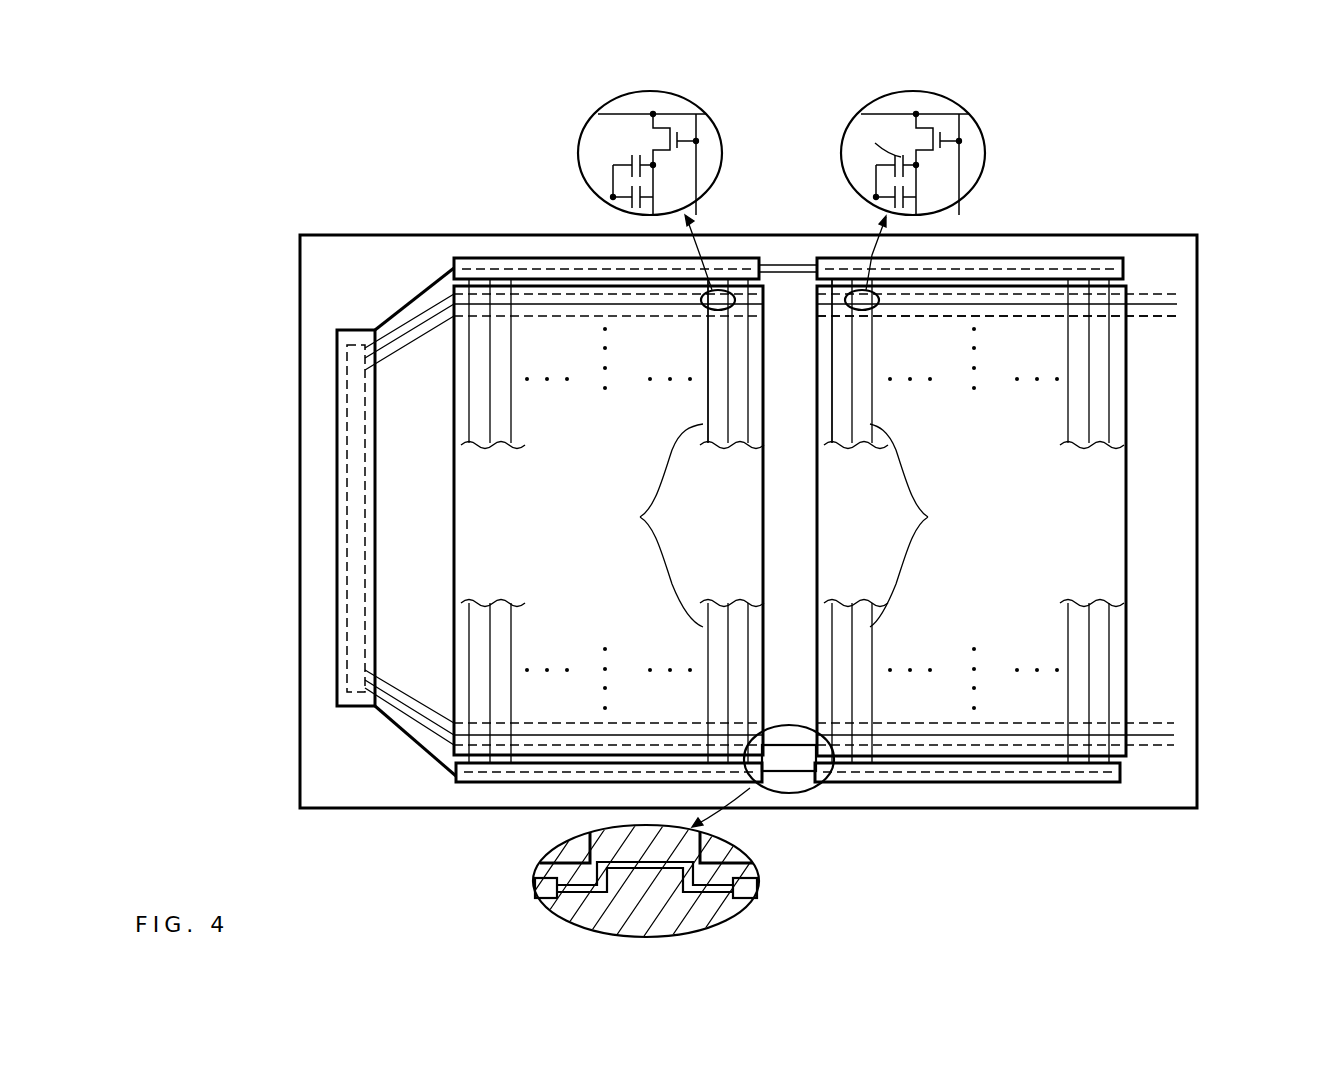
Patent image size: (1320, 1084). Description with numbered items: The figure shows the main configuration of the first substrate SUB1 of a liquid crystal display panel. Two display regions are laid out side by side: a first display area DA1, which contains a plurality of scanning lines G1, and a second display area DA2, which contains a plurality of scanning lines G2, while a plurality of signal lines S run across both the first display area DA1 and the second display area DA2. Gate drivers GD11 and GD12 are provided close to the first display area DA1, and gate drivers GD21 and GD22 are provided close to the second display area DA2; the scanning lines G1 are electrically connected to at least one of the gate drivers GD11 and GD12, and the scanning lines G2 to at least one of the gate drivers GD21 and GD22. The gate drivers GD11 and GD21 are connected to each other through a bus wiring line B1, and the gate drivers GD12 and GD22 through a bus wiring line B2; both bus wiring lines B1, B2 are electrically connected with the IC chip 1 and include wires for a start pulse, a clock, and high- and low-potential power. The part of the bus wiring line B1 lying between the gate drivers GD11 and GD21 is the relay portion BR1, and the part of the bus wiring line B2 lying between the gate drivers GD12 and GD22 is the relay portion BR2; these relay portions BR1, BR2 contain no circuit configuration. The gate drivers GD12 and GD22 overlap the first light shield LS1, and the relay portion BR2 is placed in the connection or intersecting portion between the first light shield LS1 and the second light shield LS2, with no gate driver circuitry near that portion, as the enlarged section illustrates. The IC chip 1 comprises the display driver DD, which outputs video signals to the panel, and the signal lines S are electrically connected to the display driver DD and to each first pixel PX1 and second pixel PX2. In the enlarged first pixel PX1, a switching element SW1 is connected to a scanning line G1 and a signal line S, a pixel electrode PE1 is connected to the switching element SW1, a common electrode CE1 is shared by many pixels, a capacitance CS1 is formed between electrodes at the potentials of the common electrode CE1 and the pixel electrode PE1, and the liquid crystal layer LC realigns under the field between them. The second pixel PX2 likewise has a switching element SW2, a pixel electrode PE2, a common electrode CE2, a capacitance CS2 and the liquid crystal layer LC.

The IC chip 1 is at (338, 706).
The first substrate SUB1 is at (1197, 809).
The display driver DD is at (347, 503).
The bus wiring line B1 is at (422, 292).
The bus wiring line B2 is at (453, 770).
The gate driver GD11 is at (479, 258).
The gate driver GD12 is at (470, 773).
The gate driver GD21 is at (1093, 258).
The gate driver GD22 is at (1067, 773).
The relay portion BR1 is at (788, 266).
The relay portion BR2 is at (670, 835).
The first display area DA1 is at (451, 677).
The second display area DA2 is at (1127, 570).
The scanning lines G1 is at (697, 176).
The scanning lines G2 is at (959, 176).
The signal lines S is at (1005, 317).
The first pixel PX1 is at (654, 185).
The second pixel PX2 is at (917, 185).
The switching element SW1 is at (686, 130).
The switching element SW2 is at (949, 130).
The pixel electrode PE1 is at (655, 165).
The pixel electrode PE2 is at (918, 165).
The liquid crystal layer LC is at (638, 157).
The capacitance CS1 is at (633, 208).
The capacitance CS2 is at (896, 208).
The common electrode CE1 is at (611, 197).
The common electrode CE2 is at (874, 197).
The first light shield LS1 is at (708, 875).
The second light shield LS2 is at (612, 840).